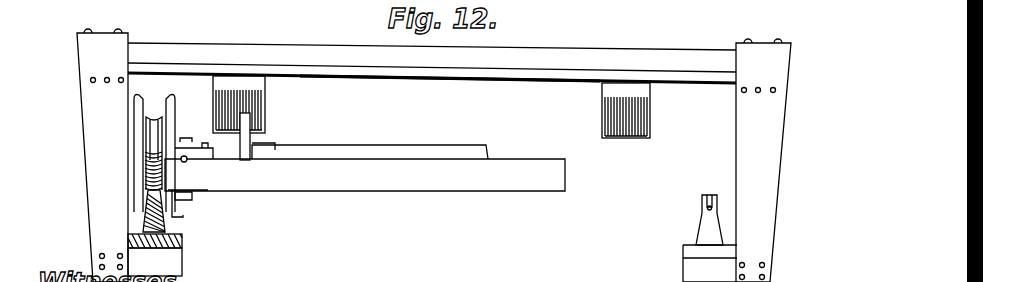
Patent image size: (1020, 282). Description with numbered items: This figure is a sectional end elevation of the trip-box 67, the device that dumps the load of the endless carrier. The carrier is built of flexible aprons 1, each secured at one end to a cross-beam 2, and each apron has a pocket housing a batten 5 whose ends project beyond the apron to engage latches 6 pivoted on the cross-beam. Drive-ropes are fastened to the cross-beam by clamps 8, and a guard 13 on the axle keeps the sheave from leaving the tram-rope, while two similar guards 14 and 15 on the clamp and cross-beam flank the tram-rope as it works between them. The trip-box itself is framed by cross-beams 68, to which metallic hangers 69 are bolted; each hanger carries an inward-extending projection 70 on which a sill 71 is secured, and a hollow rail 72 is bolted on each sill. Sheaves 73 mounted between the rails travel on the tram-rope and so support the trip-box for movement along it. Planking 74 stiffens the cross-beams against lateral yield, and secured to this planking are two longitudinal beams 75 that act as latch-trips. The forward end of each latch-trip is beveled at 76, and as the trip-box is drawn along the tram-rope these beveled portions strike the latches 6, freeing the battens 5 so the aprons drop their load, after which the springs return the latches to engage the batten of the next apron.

The apron 1 is at (502, 163).
The cross-beam 2 is at (383, 178).
The batten 5 is at (248, 157).
The latch 6 is at (252, 136).
The clamp 8 is at (188, 158).
The guard 13 is at (137, 125).
The guard 14 is at (176, 208).
The guard 15 is at (176, 101).
The trip-box 67 is at (432, 49).
The cross-beam 68 is at (194, 30).
The hanger 69 is at (85, 88).
The projection 70 is at (683, 272).
The sill 71 is at (181, 243).
The hollow rail 72 is at (167, 228).
The sheave 73 is at (147, 196).
The planking 74 is at (417, 76).
The longitudinal beam 75 is at (263, 86).
The beveled portion 76 is at (248, 100).